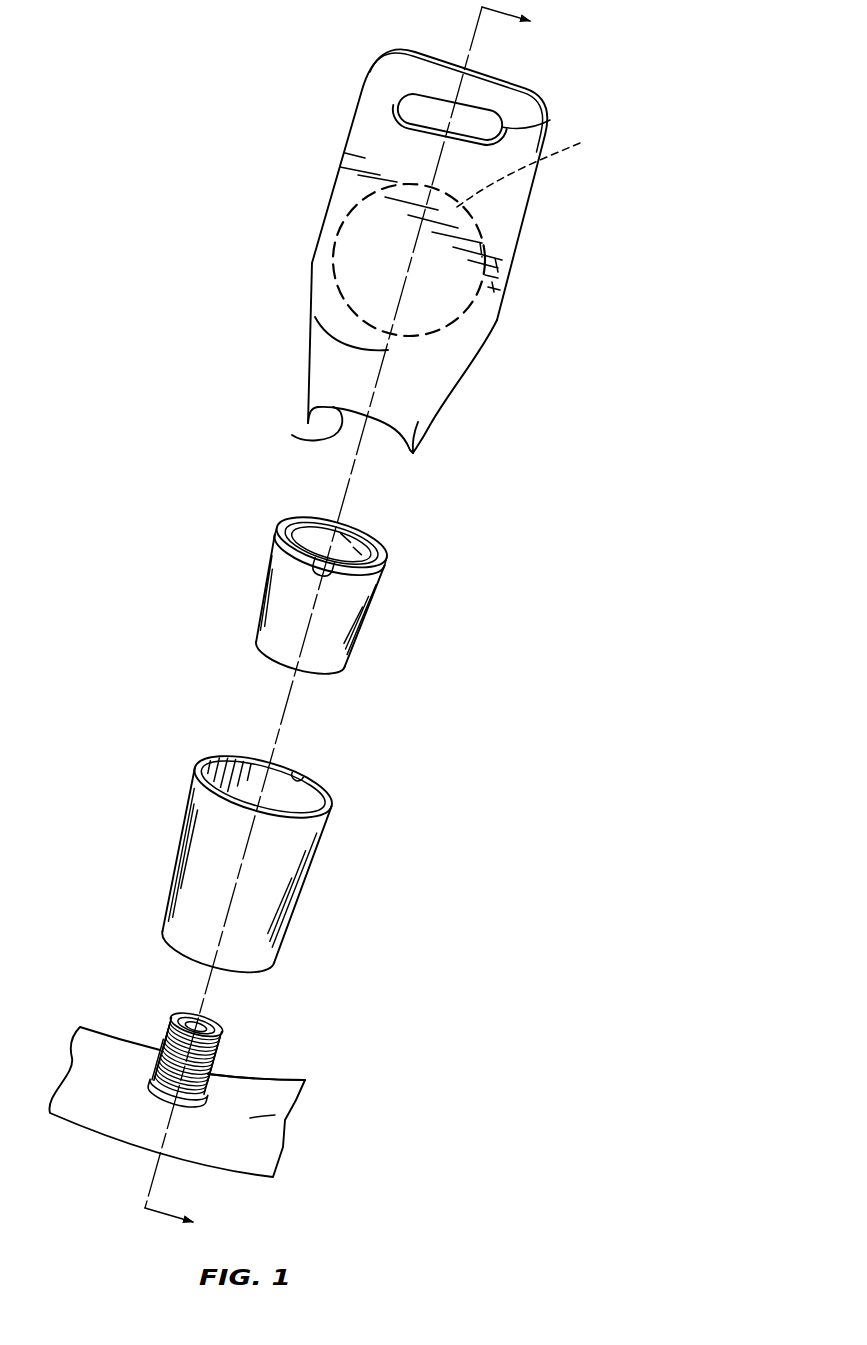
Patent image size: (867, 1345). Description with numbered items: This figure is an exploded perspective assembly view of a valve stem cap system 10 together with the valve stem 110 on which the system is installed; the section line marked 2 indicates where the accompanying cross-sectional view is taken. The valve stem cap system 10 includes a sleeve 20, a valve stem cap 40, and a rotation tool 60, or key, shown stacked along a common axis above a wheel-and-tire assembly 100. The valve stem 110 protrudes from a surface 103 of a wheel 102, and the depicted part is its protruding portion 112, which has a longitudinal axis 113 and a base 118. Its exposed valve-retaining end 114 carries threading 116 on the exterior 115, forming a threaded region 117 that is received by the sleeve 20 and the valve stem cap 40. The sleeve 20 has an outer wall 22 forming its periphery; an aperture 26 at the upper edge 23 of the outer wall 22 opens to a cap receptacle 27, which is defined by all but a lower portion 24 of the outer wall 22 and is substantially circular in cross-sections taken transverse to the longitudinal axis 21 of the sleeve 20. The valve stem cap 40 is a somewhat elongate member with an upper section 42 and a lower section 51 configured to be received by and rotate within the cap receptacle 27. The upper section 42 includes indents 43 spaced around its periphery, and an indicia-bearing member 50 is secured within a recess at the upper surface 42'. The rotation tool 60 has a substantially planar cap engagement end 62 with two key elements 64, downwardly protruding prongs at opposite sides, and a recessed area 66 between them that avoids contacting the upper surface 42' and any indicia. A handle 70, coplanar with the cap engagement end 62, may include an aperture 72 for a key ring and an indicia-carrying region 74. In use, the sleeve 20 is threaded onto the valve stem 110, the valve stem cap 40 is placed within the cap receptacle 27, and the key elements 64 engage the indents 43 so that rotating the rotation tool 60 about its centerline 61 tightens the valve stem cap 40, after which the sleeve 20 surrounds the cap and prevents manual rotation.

The section line 2- 2 is at (349, 621).
The valve stem cap system 10 is at (282, 112).
The sleeve 20 is at (334, 895).
The longitudinal axis 21 is at (243, 861).
The outer wall 22 is at (332, 799).
The upper edge 23 is at (286, 762).
The lower portion 24 is at (249, 961).
The aperture 26 is at (303, 780).
The cap receptacle 27 is at (230, 778).
The valve stem cap 40 is at (380, 634).
The upper section 42 is at (408, 546).
The upper surface 42' is at (355, 527).
The indent 43 is at (278, 524).
The indicia-bearing member 50 is at (368, 531).
The lower section 51 is at (356, 673).
The rotation tool 60 is at (498, 340).
The centerline 61 is at (311, 313).
The cap engagement end 62 is at (426, 443).
The key element 64 is at (306, 408).
The recessed area 66 is at (298, 438).
The handle 70 is at (543, 189).
The aperture 72 is at (549, 116).
The indicia-carrying region 74 is at (578, 148).
The wheel-and-tire assembly 100 is at (53, 1033).
The wheel 102 is at (290, 1157).
The surface 103 is at (240, 1123).
The valve stem 110 is at (161, 998).
The protruding portion 112 is at (222, 1090).
The longitudinal axis 113 is at (208, 1048).
The valve-retaining end 114 is at (194, 1029).
The exterior 115 is at (150, 1067).
The threading 116 is at (167, 1048).
The threaded region 117 is at (216, 1063).
The base 118 is at (163, 1095).